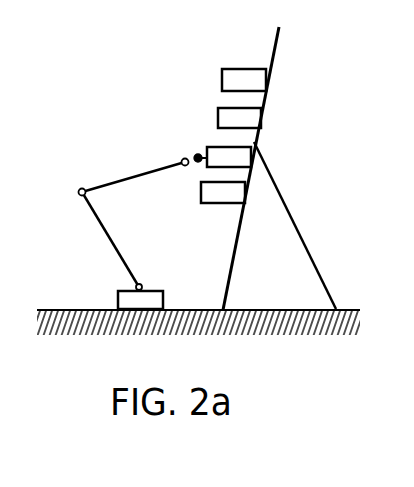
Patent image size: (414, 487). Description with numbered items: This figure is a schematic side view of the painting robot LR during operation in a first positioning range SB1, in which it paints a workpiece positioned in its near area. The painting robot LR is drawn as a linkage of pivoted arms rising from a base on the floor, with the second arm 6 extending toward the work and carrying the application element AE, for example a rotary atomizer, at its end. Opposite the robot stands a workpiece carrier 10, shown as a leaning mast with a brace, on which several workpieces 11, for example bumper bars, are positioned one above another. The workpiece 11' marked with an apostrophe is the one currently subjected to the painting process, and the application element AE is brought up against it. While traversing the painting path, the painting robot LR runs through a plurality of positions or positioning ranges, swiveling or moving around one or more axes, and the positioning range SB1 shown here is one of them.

The workpiece carrier 10 is at (303, 233).
The workpieces 11 is at (276, 131).
The workpiece 11' is at (281, 138).
The second arm 6 is at (137, 172).
The application element AE is at (197, 153).
The painting robot LR is at (91, 158).
The first positioning range SB1 is at (105, 276).